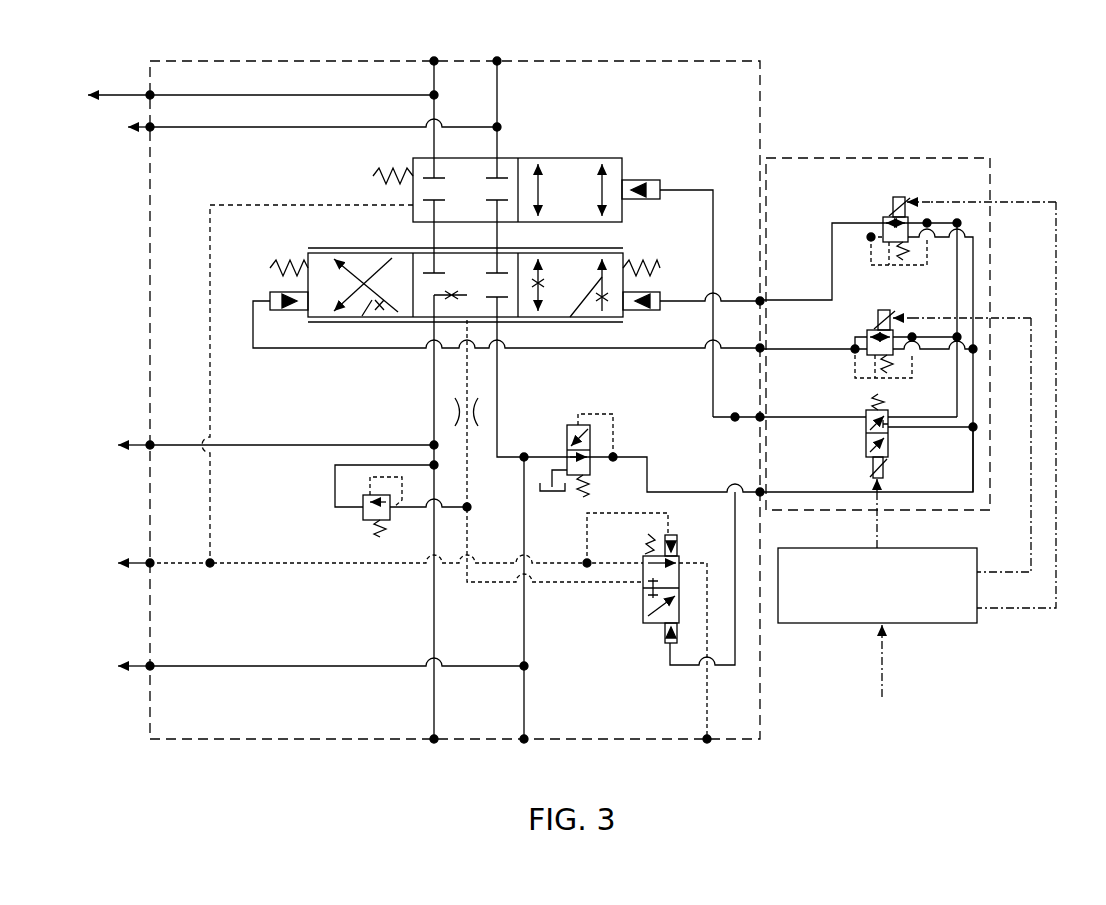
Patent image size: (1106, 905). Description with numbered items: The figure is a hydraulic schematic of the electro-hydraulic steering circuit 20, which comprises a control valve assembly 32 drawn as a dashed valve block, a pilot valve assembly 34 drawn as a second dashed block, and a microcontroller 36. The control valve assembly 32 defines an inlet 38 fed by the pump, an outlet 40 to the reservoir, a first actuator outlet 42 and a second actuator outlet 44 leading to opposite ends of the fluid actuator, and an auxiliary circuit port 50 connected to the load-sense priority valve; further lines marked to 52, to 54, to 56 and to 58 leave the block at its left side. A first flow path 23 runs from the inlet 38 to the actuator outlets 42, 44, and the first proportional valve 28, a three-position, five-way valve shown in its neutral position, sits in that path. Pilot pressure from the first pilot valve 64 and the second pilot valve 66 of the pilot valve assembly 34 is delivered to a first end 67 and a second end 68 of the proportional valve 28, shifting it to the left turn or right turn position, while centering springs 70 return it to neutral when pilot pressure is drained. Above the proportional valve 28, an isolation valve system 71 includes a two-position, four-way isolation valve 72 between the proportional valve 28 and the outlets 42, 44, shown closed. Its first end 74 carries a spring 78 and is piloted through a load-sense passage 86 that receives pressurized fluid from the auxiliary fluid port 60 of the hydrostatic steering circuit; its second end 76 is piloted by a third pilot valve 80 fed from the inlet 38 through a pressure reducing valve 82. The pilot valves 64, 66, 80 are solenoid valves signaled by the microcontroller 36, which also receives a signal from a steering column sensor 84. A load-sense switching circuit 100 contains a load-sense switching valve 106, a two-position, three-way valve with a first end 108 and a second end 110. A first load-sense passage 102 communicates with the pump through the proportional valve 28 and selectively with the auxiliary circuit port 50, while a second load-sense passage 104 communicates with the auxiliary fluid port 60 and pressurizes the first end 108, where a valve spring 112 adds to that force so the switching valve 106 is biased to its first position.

The electro-hydraulic steering circuit 20 is at (1054, 126).
The first flow path 23 is at (501, 302).
The first proportional valve 28 is at (333, 247).
The control valve assembly 32 is at (278, 742).
The pilot valve assembly 34 is at (871, 157).
The microcontroller 36 is at (957, 625).
The inlet 38 is at (527, 742).
The outlet 40 is at (431, 742).
The first actuator outlet 42 is at (431, 62).
The second actuator outlet 44 is at (500, 62).
The auxiliary circuit port 50 is at (706, 742).
The line to 52 is at (308, 665).
The line to 54 is at (263, 444).
The line to 56 is at (244, 92).
The line to 58 is at (295, 126).
The auxiliary fluid port 60 is at (366, 562).
The first pilot valve 64 is at (862, 322).
The second pilot valve 66 is at (878, 213).
The first end 67 is at (307, 254).
The second end 68 is at (626, 254).
The centering springs 70 is at (272, 272).
The isolation valve system 71 is at (643, 105).
The isolation valve 72 is at (512, 273).
The first end 74 is at (413, 194).
The second end 76 is at (625, 181).
The spring 78 is at (393, 174).
The third pilot valve 80 is at (852, 438).
The pressure reducing valve 82 is at (566, 437).
The sensor 84 is at (881, 675).
The load-sense passage 86 is at (212, 412).
The load-sense switching circuit 100 is at (645, 585).
The first load-sense passage 102 is at (494, 584).
The second load-sense passage 104 is at (308, 566).
The load-sense switching valve 106 is at (643, 591).
The first end 108 is at (676, 557).
The second end 110 is at (652, 624).
The valve spring 112 is at (654, 553).